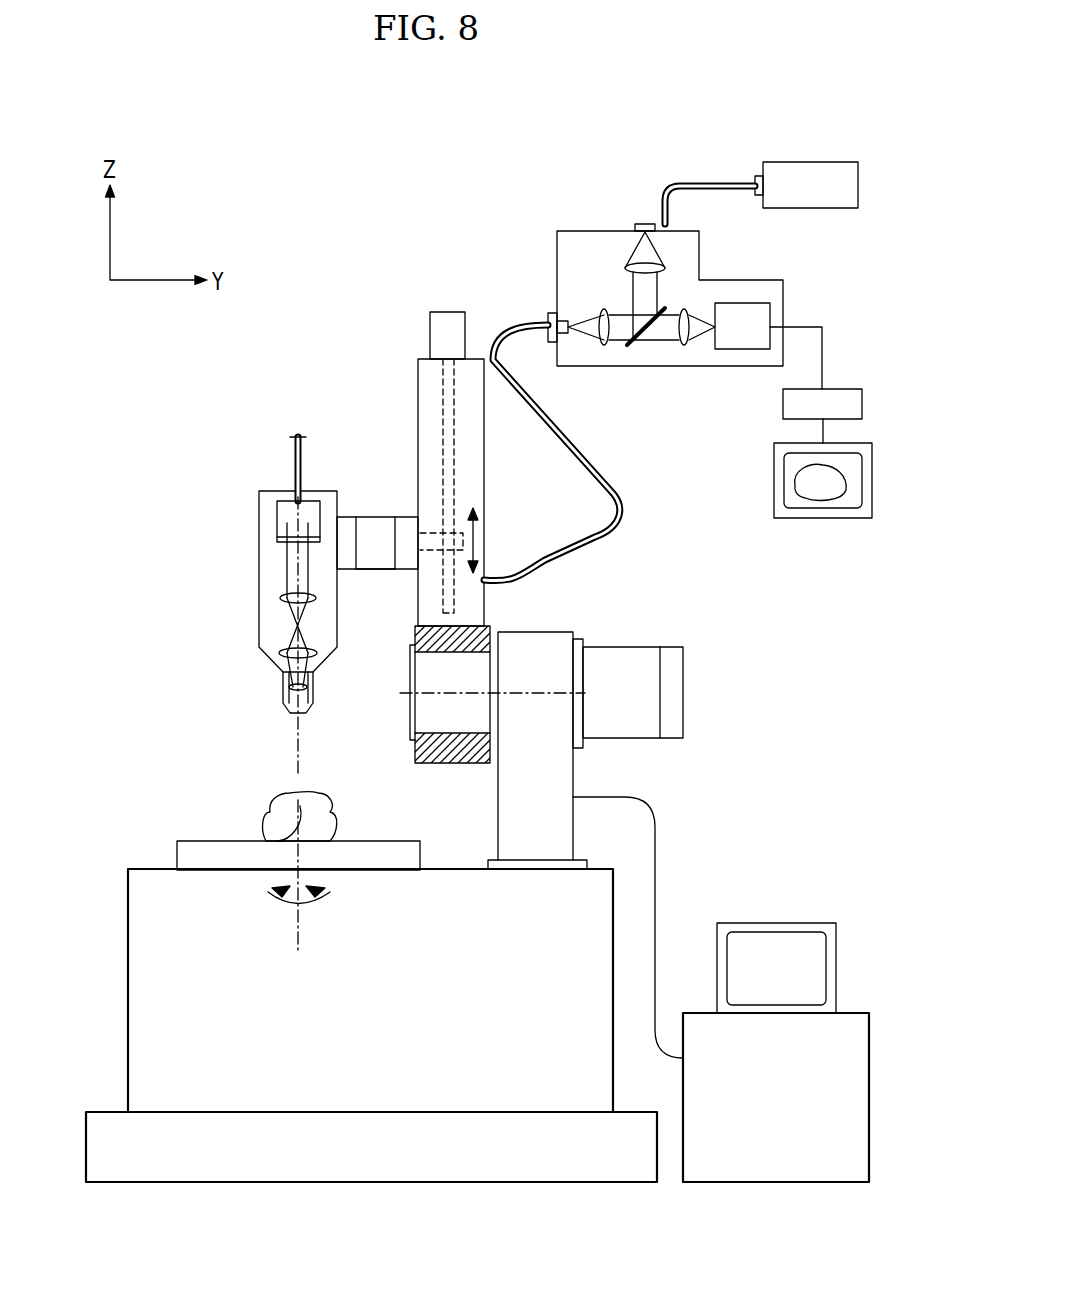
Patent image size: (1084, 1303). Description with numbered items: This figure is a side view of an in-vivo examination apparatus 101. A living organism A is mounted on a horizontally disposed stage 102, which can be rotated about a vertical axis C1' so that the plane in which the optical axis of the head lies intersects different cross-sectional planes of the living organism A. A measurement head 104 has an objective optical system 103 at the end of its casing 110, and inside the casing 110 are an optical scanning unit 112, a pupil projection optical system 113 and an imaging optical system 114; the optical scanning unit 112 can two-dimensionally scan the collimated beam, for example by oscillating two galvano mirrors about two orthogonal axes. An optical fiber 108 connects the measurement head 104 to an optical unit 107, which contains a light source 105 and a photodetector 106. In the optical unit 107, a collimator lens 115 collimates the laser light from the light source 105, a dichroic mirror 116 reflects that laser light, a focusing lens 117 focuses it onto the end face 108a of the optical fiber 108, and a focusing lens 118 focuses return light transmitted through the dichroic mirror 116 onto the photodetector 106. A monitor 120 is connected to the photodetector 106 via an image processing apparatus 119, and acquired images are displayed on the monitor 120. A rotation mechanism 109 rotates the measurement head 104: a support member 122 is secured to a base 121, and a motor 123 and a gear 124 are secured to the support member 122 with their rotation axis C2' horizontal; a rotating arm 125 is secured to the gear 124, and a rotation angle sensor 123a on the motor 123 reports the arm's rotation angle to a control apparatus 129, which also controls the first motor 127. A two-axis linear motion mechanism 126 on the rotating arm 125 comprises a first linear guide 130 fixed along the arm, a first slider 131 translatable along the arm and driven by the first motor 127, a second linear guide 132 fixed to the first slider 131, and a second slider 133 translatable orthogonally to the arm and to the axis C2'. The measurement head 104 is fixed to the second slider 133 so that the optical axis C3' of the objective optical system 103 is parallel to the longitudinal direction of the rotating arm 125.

The in-vivo examination apparatus 101 is at (268, 222).
The stage 102 is at (180, 852).
The objective optical system 103 is at (283, 696).
The measurement head 104 is at (226, 672).
The light source 105 is at (803, 162).
The photodetector 106 is at (750, 303).
The optical unit 107 is at (542, 204).
The optical fiber 108 is at (296, 467).
The end face 108a is at (566, 335).
The rotation mechanism 109 is at (382, 745).
The casing 110 is at (259, 618).
The optical scanning unit 112 is at (278, 518).
The pupil projection optical system 113 is at (284, 595).
The imaging optical system 114 is at (280, 650).
The collimator lens 115 is at (660, 265).
The dichroic mirror 116 is at (630, 345).
The focusing lens 117 is at (600, 310).
The focusing lens 118 is at (684, 345).
The image processing apparatus 119 is at (840, 389).
The monitor 120 is at (828, 518).
The base 121 is at (128, 1005).
The support member 122 is at (573, 772).
The motor 123 is at (630, 647).
The rotation angle sensor 123a is at (683, 693).
The gear 124 is at (588, 638).
The rotating arm 125 is at (484, 490).
The two-axis linear motion mechanism 126 is at (370, 487).
The first motor 127 is at (445, 312).
The control apparatus 129 is at (804, 910).
The first linear guide 130 is at (388, 338).
The first slider 131 is at (405, 517).
The second linear guide 132 is at (375, 582).
The second slider 133 is at (345, 517).
The living organism A is at (263, 820).
The vertical axis C1' is at (320, 880).
The rotation axis C2' is at (492, 734).
The optical axis C3' is at (255, 637).